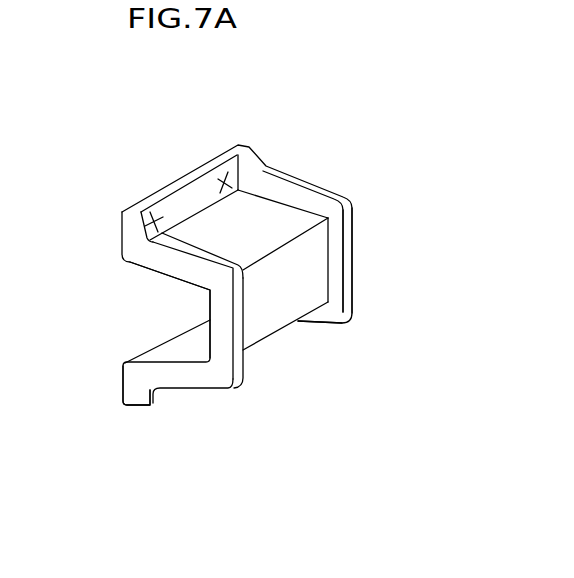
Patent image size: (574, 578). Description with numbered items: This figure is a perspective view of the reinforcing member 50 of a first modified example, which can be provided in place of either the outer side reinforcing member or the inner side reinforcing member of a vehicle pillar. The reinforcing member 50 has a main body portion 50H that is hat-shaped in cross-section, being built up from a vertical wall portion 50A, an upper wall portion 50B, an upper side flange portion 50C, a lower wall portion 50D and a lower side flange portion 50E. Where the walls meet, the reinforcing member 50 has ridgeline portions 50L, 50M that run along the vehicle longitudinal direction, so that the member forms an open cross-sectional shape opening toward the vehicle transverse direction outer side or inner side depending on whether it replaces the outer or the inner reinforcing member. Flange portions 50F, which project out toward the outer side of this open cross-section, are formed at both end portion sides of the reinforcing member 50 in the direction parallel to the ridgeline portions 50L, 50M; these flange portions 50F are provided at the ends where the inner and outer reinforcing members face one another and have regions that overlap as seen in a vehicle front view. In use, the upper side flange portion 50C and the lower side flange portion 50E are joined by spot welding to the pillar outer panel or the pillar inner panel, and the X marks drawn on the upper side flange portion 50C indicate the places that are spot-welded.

The reinforcing member 50 is at (229, 254).
The vertical wall portion 50A is at (270, 327).
The upper wall portion 50B is at (292, 207).
The upper side flange portion 50C is at (192, 195).
The lower wall portion 50D is at (195, 347).
The lower side flange portion 50E is at (122, 390).
The flange portions 50F is at (320, 201).
The main body portion 50H is at (279, 340).
The ridgeline portion 50L is at (325, 247).
The ridgeline portion 50M is at (287, 328).